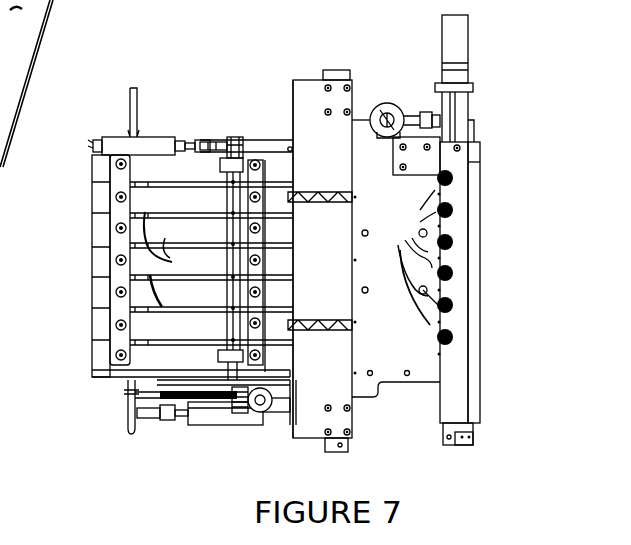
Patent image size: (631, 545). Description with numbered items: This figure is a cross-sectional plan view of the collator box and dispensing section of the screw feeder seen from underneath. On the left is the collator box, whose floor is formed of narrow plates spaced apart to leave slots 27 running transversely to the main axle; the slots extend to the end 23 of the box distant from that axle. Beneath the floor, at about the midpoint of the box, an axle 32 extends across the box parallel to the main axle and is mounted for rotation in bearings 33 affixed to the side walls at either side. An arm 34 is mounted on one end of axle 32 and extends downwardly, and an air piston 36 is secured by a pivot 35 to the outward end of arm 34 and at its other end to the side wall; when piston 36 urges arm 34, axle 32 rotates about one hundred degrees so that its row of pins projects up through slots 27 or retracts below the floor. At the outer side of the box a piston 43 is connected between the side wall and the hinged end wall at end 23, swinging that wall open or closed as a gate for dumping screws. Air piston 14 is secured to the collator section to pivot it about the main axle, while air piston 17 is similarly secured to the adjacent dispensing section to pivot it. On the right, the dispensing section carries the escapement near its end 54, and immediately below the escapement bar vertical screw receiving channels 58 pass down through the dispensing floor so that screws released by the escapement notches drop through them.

The air piston 14 is at (262, 413).
The air piston 17 is at (392, 104).
The end of collator box distant from axle 23 is at (90, 258).
The slots 27 is at (210, 272).
The axle 32 is at (216, 358).
The bearings 33 is at (212, 167).
The arm 34 is at (222, 140).
The pivot 35 is at (93, 144).
The air piston 36 is at (153, 137).
The piston 43 is at (226, 412).
The end of dispensing section 54 is at (485, 250).
The screw receiving holes or channels 58 is at (432, 190).